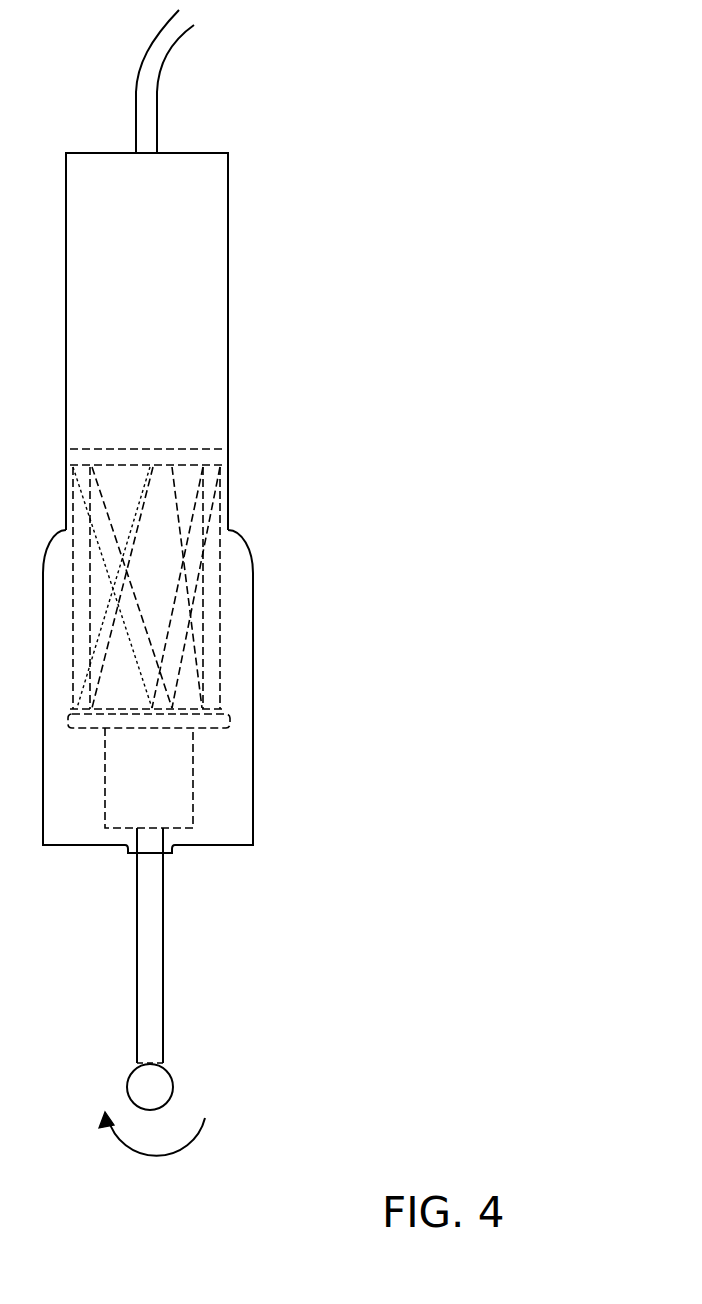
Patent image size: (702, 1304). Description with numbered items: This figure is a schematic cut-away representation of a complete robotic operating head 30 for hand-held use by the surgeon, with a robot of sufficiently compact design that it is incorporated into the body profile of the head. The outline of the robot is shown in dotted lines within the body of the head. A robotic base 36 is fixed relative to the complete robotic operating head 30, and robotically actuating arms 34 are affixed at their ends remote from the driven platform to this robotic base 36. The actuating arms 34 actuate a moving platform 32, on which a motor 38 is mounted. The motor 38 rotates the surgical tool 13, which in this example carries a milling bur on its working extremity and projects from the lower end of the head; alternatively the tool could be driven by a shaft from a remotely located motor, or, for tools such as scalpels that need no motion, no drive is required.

The robotic operating head 30 is at (430, 512).
The robotic base 36 is at (224, 459).
The robotically actuating arms 34 is at (222, 645).
The moving platform 32 is at (232, 719).
The motor 38 is at (193, 800).
The surgical tool 13 is at (163, 1012).